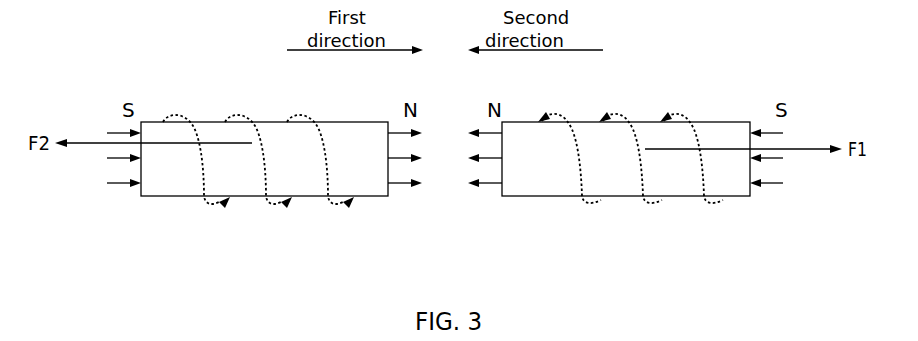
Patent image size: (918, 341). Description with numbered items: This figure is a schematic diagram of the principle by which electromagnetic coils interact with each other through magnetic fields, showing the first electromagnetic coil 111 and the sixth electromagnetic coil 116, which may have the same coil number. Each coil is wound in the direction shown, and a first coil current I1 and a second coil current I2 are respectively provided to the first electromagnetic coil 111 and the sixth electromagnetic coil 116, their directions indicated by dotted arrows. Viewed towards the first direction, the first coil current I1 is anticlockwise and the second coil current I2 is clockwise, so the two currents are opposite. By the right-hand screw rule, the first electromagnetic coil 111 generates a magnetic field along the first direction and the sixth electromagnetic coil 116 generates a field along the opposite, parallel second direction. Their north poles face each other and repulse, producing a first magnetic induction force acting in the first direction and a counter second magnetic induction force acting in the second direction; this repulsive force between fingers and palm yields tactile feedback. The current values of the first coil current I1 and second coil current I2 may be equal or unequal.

The first electromagnetic coil 111 is at (258, 178).
The sixth electromagnetic coil 116 is at (630, 178).
The first coil current I1 is at (195, 135).
The second coil current I2 is at (566, 135).